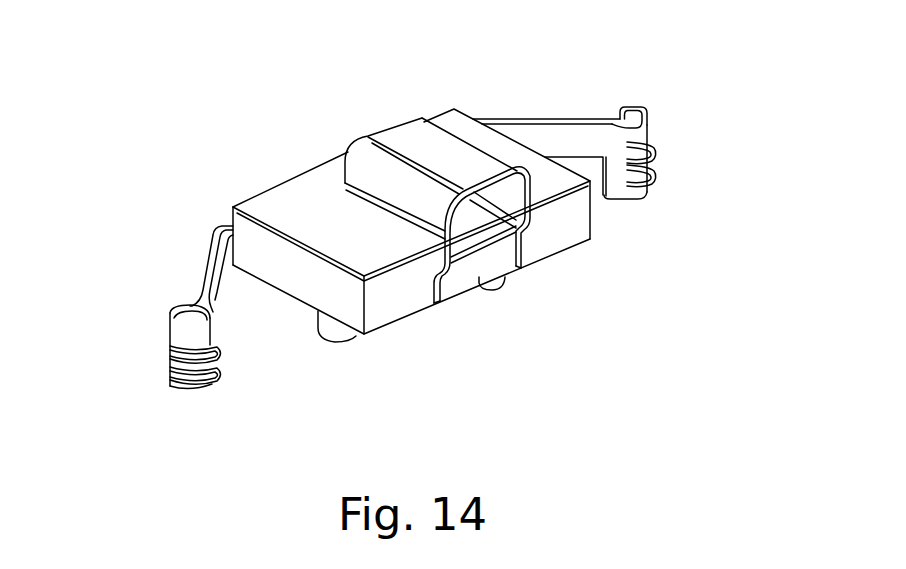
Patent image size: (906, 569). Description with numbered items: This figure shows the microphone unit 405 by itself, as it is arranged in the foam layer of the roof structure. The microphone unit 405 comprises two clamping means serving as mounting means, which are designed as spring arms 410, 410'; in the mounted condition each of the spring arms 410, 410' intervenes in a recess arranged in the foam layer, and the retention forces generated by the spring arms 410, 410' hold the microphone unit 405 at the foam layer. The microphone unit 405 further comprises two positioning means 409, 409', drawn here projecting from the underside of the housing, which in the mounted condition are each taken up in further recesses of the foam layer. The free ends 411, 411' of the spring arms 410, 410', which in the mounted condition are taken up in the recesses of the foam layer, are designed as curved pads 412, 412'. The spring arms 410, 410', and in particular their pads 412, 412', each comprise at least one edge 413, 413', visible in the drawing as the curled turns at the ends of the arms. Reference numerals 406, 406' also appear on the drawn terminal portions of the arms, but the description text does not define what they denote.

The microphone unit 405 is at (392, 112).
The spring arm 410 is at (546, 73).
The free end of spring arm 411 is at (651, 73).
The terminal sleeve 406 is at (683, 138).
The edge 413 is at (701, 148).
The curved pad 412 is at (617, 229).
The positioning means 409 is at (524, 330).
The positioning means 409' is at (360, 379).
The spring arm 410' is at (180, 245).
The free end of spring arm 411' is at (252, 371).
The terminal sleeve 406' is at (131, 372).
The edge 413' is at (231, 414).
The curved pad 412' is at (181, 442).